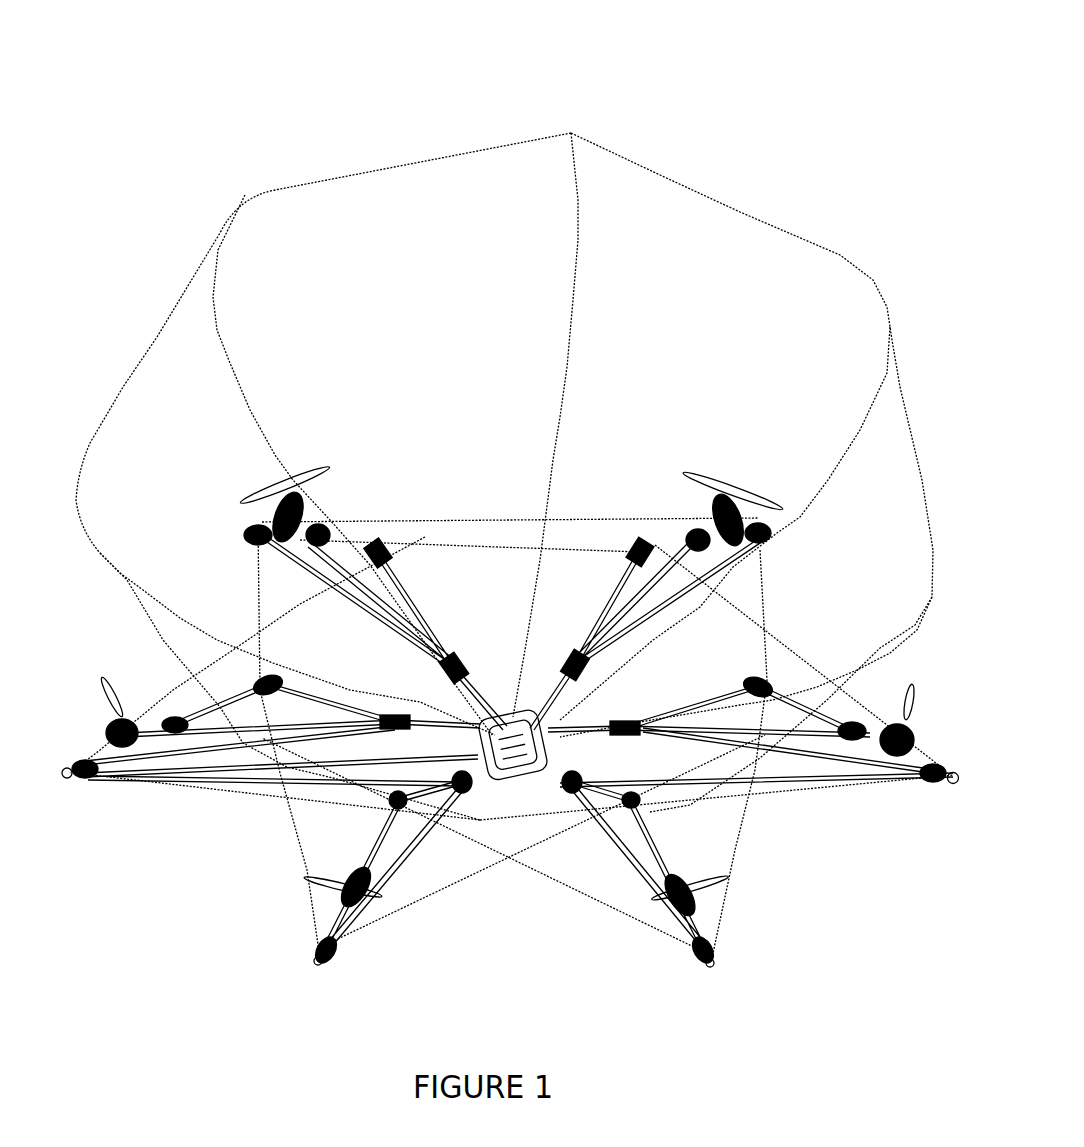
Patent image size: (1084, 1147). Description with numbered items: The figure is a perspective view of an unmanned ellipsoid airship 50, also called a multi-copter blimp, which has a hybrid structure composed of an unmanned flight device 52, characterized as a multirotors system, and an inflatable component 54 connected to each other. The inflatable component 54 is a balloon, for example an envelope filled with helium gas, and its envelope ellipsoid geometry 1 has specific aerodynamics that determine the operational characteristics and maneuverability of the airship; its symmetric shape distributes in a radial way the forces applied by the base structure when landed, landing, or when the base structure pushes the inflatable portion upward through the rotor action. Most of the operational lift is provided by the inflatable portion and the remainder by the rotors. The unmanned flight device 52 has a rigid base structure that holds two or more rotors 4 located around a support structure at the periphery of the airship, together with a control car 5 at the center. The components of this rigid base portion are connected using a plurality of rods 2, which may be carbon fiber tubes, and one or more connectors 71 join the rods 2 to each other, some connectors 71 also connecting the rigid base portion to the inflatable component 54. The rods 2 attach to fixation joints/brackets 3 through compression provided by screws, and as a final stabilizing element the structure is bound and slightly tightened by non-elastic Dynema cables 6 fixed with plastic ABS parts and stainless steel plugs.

The unmanned ellipsoid airship 50 is at (222, 122).
The unmanned flight device 52 is at (243, 814).
The inflatable component 54 is at (421, 331).
The envelope ellipsoid geometry 1 is at (137, 342).
The rods 2 is at (347, 607).
The fixation joints/brackets 3 is at (920, 787).
The rotors 4 is at (330, 892).
The control car 5 is at (463, 752).
The non-elastic Dynema cables 6 is at (567, 885).
The connectors 71 is at (455, 665).